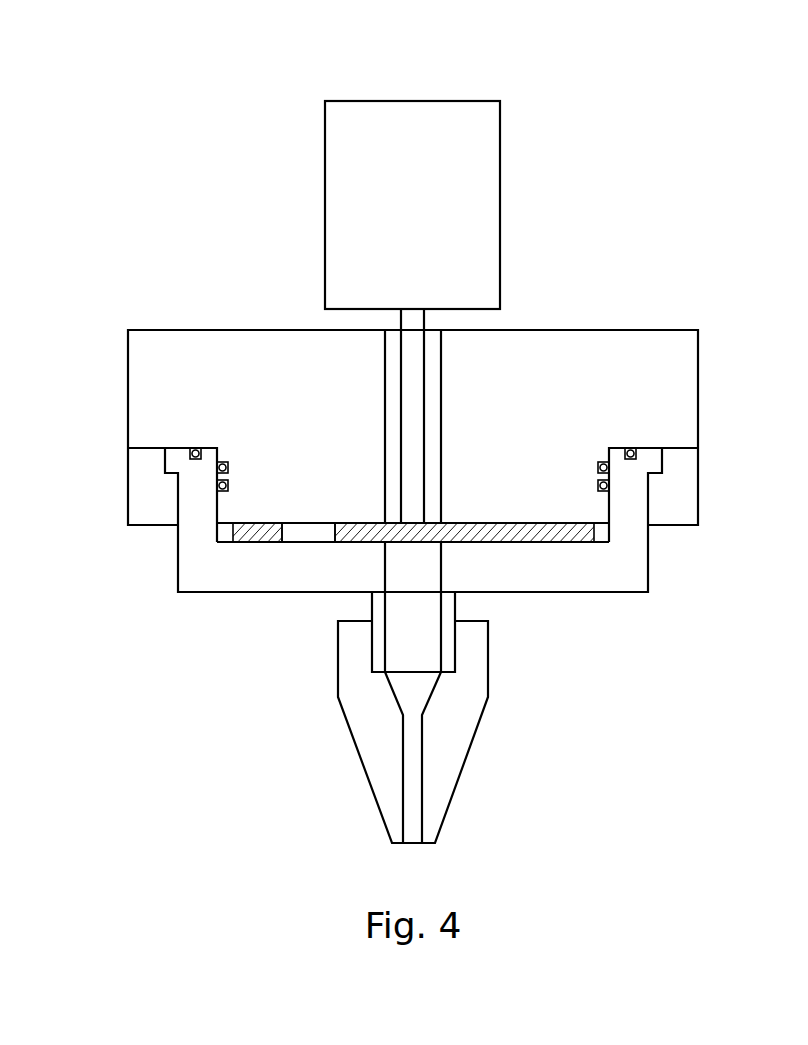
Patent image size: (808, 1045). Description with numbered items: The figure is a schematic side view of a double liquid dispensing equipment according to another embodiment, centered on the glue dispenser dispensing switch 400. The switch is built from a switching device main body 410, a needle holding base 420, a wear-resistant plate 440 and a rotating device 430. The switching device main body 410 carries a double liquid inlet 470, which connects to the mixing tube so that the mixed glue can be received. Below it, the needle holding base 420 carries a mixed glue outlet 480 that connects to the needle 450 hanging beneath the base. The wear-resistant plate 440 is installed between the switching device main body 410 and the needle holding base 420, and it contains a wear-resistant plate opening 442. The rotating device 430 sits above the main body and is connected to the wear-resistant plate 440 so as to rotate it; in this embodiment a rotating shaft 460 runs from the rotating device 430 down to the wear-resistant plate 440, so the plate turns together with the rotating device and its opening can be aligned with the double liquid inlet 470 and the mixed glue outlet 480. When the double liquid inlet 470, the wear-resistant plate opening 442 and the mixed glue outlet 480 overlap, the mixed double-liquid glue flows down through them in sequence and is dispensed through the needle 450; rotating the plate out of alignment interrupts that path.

The glue dispenser dispensing switch 400 is at (155, 69).
The switching device main body 410 is at (698, 368).
The needle holding base 420 is at (648, 568).
The rotating device 430 is at (500, 173).
The wear-resistant plate 440 is at (560, 532).
The wear-resistant plate opening 442 is at (310, 533).
The needle 450 is at (473, 653).
The rotating shaft 460 is at (415, 322).
The double liquid inlet 470 is at (383, 372).
The mixed glue outlet 480 is at (403, 641).